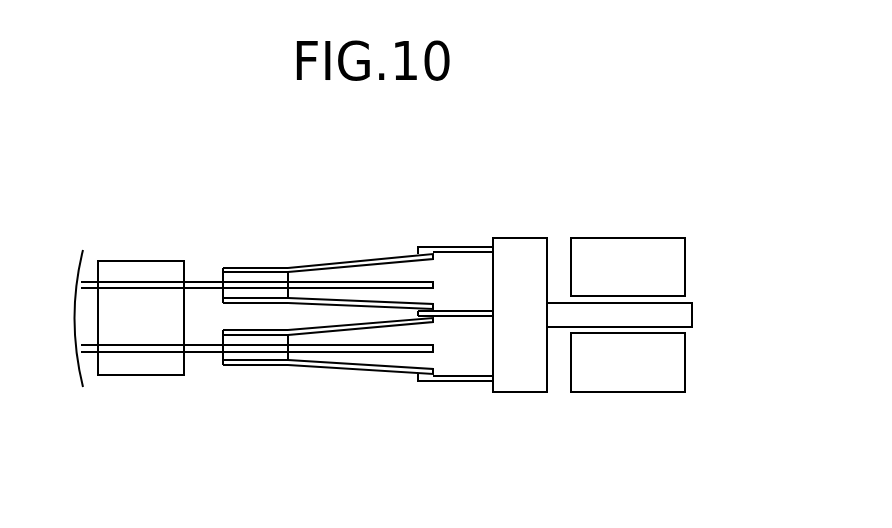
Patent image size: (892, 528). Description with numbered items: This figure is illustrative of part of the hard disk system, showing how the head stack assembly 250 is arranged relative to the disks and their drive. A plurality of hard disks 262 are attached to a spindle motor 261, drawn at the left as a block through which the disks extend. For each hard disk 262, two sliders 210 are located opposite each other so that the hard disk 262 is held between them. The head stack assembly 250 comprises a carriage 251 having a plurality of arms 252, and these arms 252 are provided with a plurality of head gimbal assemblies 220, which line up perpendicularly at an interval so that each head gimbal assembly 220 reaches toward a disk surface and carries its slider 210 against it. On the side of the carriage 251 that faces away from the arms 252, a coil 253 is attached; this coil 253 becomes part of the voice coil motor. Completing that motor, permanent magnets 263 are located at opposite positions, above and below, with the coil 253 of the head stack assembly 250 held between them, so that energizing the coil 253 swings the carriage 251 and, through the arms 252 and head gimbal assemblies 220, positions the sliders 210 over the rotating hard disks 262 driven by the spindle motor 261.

The slider 210 is at (217, 276).
The head gimbal assembly 220 is at (343, 253).
The head stack assembly 250 is at (518, 237).
The carriage 251 is at (500, 236).
The arm 252 is at (422, 245).
The coil 253 is at (682, 312).
The spindle motor 261 is at (120, 268).
The hard disk 262 is at (195, 277).
The permanent magnet 263 is at (617, 237).